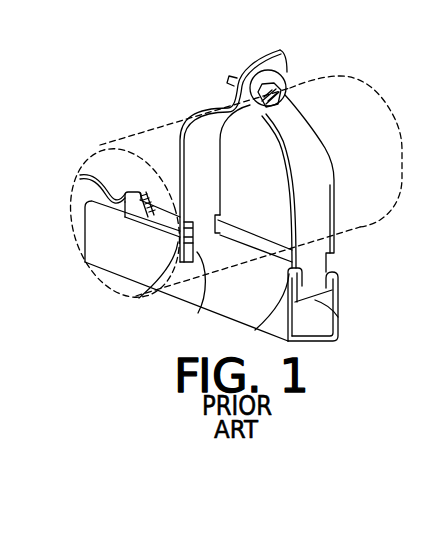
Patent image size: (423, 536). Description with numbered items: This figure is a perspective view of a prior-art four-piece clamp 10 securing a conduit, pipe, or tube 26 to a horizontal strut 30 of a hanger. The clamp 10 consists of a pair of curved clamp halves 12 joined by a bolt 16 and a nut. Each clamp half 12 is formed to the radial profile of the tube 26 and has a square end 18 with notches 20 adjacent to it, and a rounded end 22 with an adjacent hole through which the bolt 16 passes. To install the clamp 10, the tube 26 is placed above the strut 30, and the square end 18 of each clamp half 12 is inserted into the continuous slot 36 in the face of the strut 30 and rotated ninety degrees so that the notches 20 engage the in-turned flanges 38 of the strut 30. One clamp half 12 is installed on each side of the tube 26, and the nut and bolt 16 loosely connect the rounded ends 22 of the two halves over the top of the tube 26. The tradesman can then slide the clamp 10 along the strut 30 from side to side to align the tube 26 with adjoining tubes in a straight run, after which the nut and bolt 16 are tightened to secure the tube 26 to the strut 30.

The four-piece clamp 10 is at (210, 63).
The clamp half 12 is at (207, 150).
The bolt 16 is at (290, 102).
The square end 18 is at (196, 308).
The notches 20 is at (218, 218).
The rounded end 22 is at (280, 50).
The conduit, pipe, or tube 26 is at (181, 120).
The horizontal strut 30 is at (84, 257).
The continuous slot 36 is at (149, 178).
The in-turned flanges 38 is at (80, 176).